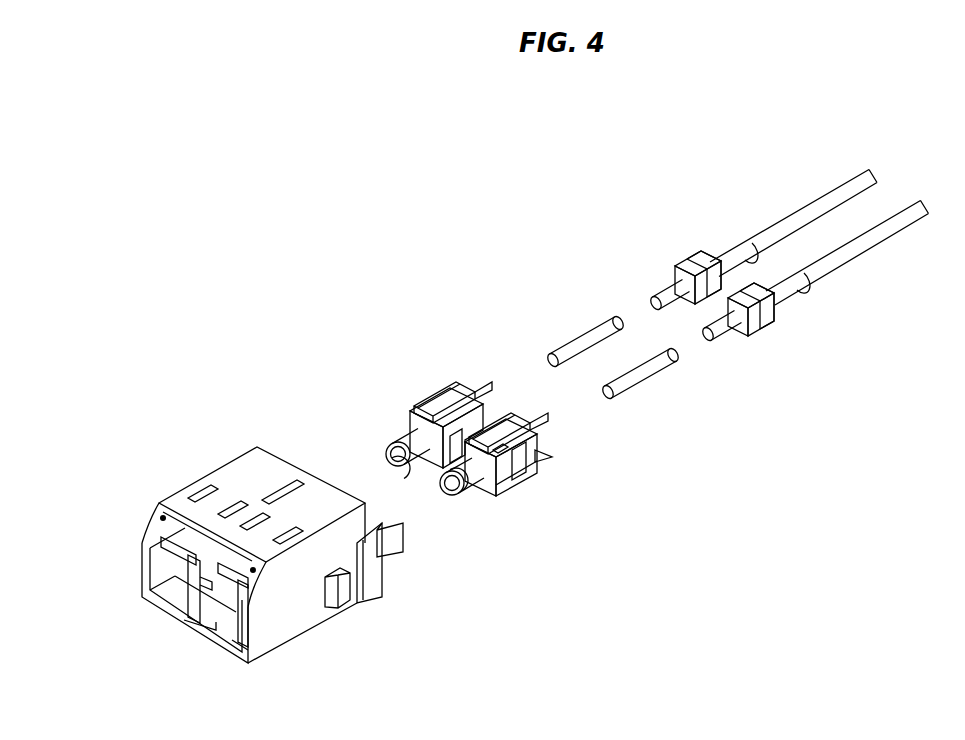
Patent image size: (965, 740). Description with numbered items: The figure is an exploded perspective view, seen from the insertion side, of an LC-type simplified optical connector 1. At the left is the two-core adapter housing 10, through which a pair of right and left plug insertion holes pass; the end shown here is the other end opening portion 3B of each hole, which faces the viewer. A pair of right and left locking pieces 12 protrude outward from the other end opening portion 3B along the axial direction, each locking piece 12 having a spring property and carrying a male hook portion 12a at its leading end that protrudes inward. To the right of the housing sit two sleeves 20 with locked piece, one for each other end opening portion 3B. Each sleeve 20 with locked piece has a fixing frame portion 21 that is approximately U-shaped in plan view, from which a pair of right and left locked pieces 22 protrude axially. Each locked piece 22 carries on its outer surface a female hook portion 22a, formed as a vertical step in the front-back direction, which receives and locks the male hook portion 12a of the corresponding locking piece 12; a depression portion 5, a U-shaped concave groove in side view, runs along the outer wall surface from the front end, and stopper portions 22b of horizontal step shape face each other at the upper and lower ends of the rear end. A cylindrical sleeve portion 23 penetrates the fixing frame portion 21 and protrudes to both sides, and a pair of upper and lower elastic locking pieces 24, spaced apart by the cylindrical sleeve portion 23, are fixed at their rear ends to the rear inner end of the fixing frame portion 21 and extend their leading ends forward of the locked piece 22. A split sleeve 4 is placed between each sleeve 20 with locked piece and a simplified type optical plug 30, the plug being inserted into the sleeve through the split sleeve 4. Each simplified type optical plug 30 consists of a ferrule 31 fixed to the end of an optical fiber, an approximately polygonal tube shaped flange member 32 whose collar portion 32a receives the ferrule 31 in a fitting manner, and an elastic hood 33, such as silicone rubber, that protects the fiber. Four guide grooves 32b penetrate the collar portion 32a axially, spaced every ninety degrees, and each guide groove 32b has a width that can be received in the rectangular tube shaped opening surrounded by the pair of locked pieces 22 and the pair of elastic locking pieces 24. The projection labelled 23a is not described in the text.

The LC-type simplified optical connector 1 is at (398, 292).
The adapter housing 10 is at (248, 478).
The other end opening portion 3B is at (150, 577).
The locking piece 12 is at (397, 548).
The male hook portion 12a is at (383, 531).
The sleeve with locked piece 20 is at (493, 422).
The fixing frame portion 21 is at (430, 402).
The locked piece 22 is at (455, 386).
The female hook portion 22a is at (501, 443).
The stopper portion 22b is at (511, 492).
The cylindrical sleeve portion 23 is at (398, 447).
The projection 23a is at (553, 459).
The elastic locking piece 24 is at (484, 386).
The depression portion 5 is at (545, 461).
The split sleeve 4 is at (583, 345).
The simplified type optical plug 30 is at (758, 302).
The ferrule 31 is at (666, 294).
The flange member 32 is at (768, 277).
The collar portion 32a is at (668, 183).
The guide groove 32b is at (689, 263).
The hood 33 is at (778, 285).